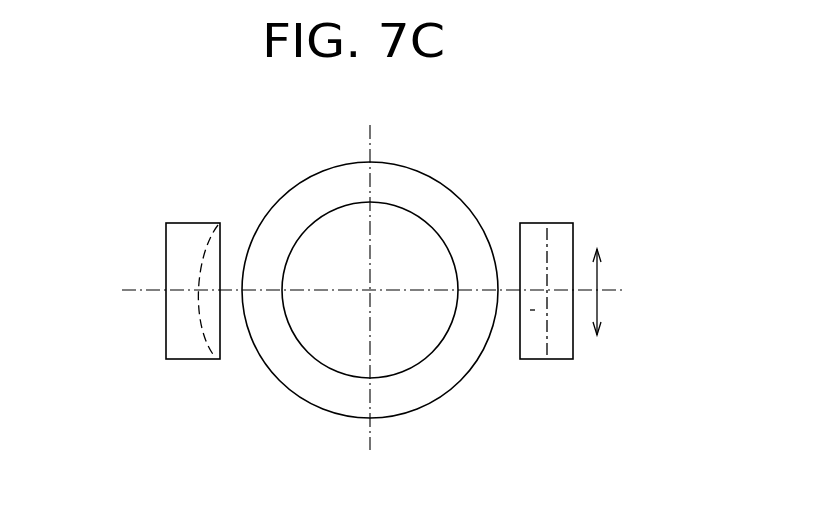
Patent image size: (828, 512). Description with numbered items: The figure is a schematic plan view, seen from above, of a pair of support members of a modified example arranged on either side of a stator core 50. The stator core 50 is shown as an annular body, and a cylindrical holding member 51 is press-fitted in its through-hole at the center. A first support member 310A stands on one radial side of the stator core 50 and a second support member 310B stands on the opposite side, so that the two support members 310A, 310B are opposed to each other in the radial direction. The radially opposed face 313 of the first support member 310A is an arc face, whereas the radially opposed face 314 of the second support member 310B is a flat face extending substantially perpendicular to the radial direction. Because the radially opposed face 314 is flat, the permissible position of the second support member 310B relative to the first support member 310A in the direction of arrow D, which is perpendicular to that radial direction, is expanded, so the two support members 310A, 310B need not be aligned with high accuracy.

The stator core 50 is at (422, 188).
The holding member 51 is at (333, 236).
The first support member 310A is at (181, 252).
The second support member 310B is at (563, 252).
The radially opposed face 313 is at (212, 332).
The radially opposed face 314 is at (513, 322).
The direction of arrow D is at (598, 305).